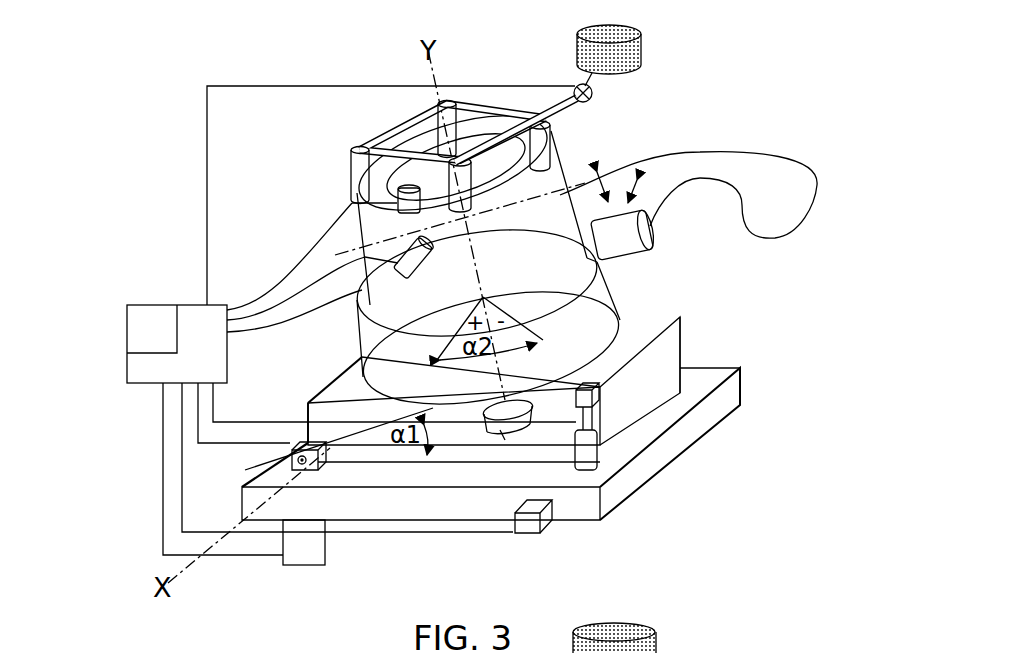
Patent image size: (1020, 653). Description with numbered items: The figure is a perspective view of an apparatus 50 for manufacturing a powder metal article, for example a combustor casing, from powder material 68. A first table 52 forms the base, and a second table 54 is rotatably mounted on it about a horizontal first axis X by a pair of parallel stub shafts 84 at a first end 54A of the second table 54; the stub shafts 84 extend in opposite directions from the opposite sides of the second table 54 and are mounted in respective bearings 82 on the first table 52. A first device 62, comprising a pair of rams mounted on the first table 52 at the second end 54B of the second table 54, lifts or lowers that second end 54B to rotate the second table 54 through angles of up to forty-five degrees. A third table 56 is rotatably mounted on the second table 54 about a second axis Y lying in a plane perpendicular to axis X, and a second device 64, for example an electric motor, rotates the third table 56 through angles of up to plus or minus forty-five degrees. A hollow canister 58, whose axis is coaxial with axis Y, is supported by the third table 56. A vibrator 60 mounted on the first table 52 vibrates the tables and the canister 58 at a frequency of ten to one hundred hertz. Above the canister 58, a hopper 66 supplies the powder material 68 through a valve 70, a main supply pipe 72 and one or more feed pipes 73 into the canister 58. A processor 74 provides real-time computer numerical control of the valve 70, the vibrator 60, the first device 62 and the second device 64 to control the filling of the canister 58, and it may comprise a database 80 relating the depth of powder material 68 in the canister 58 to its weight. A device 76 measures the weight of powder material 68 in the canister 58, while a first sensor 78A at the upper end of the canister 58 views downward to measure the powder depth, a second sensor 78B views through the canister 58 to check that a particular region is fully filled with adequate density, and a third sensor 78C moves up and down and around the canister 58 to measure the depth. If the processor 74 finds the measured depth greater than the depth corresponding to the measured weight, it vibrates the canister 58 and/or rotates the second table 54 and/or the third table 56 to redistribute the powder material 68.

The apparatus 50 is at (665, 133).
The first table 52 is at (663, 452).
The second table 54 is at (638, 392).
The first end of the second table 54A is at (332, 380).
The second end of the second table 54B is at (680, 320).
The third table 56 is at (597, 330).
The hollow canister 58 is at (540, 262).
The vibrator 60 is at (543, 525).
The first device 62 is at (585, 453).
The second device 64 is at (503, 428).
The hopper 66 is at (642, 50).
The powder material 68 is at (580, 31).
The valve 70 is at (593, 95).
The main supply pipe 72 is at (573, 105).
The feed pipes 73 is at (358, 165).
The processor 74 is at (160, 305).
The device to measure the weight 76 is at (305, 557).
The first sensor 78A is at (352, 203).
The second sensor 78B is at (398, 272).
The third sensor 78C is at (643, 250).
The database 80 is at (137, 337).
The bearings 82 is at (290, 453).
The stub shafts 84 is at (246, 494).